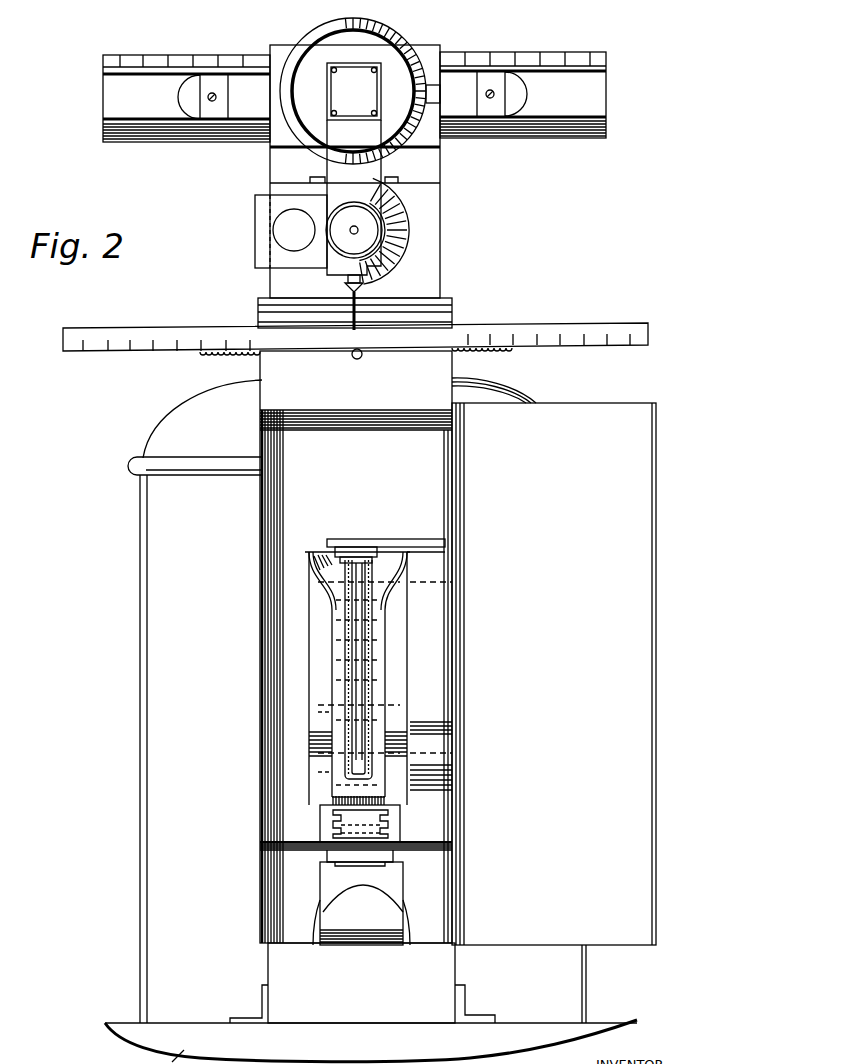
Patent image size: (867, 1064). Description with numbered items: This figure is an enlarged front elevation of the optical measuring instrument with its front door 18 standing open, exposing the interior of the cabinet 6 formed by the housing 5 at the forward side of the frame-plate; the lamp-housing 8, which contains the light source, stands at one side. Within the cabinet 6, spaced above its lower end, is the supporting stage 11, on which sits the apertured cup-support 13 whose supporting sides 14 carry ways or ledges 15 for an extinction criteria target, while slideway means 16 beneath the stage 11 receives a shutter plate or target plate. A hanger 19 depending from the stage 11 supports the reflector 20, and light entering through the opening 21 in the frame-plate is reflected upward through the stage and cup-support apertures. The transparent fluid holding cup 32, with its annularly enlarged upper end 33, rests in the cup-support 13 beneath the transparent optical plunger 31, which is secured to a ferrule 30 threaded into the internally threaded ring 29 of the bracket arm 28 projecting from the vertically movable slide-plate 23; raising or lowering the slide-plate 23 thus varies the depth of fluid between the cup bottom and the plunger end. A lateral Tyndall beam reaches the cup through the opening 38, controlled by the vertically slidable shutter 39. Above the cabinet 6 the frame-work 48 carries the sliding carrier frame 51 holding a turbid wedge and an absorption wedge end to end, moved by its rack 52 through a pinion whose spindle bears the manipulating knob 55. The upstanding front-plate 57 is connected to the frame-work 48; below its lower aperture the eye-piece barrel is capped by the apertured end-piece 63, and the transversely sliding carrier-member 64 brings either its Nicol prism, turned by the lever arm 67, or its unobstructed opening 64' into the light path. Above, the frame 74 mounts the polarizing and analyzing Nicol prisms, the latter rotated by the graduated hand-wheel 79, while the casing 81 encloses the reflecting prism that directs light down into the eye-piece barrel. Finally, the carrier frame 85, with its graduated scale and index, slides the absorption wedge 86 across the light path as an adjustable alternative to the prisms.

The housing 5 is at (262, 563).
The cabinet 6 is at (362, 687).
The lamp-housing 8 is at (195, 701).
The supporting stage 11 is at (268, 870).
The apertured cup-support 13 is at (393, 808).
The supporting sides 14 is at (402, 822).
The ways or ledges 15 is at (338, 812).
The slideway means 16 is at (392, 868).
The door 18 is at (554, 700).
The hanger 19 is at (403, 893).
The reflector 20 is at (395, 927).
The aperture or opening 21 is at (346, 910).
The slide-plate 23 is at (378, 678).
The bracket arm 28 is at (420, 540).
The internally threaded ring 29 is at (340, 538).
The ferrule 30 is at (362, 549).
The transparent optical plunger 31 is at (368, 628).
The transparent fluid holding cup 32 is at (385, 703).
The annularly enlarged upper end 33 is at (308, 560).
The opening 38 is at (318, 772).
The shutter 39 is at (318, 714).
The frame-work 48 is at (440, 303).
The carrier frame 51 is at (505, 326).
The rack 52 is at (485, 351).
The manipulating knob 55 is at (362, 360).
The front-plate 57 is at (432, 168).
The apertured end-piece 63 is at (366, 228).
The carrier-member 64 is at (269, 231).
The unobstructed opening 64' is at (263, 235).
The lever arm 67 is at (362, 306).
The frame 74 is at (442, 50).
The hand-wheel 79 is at (420, 44).
The casing 81 is at (354, 169).
The carrier frame 85 is at (178, 137).
The absorption wedge 86 is at (245, 113).